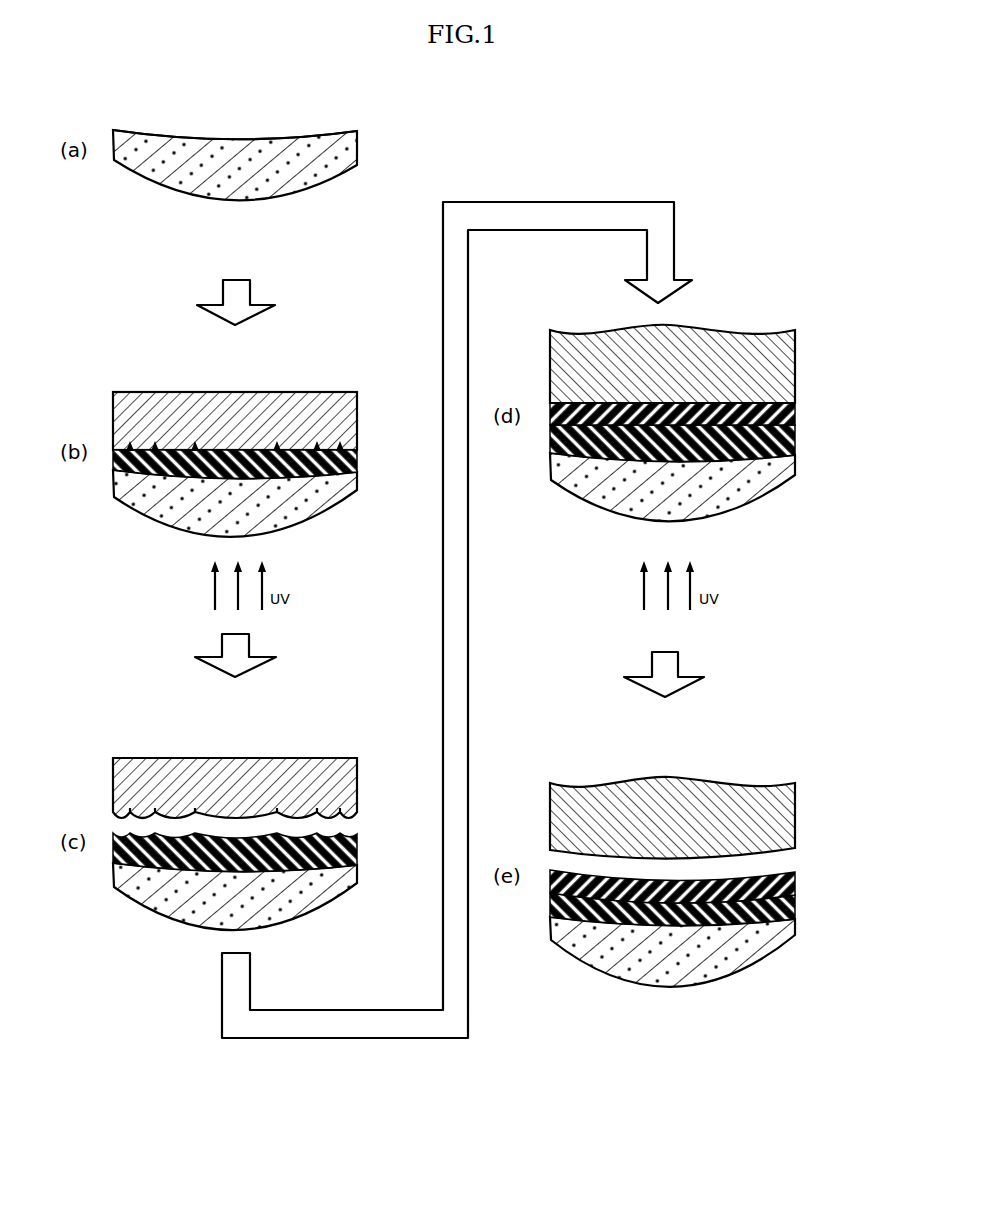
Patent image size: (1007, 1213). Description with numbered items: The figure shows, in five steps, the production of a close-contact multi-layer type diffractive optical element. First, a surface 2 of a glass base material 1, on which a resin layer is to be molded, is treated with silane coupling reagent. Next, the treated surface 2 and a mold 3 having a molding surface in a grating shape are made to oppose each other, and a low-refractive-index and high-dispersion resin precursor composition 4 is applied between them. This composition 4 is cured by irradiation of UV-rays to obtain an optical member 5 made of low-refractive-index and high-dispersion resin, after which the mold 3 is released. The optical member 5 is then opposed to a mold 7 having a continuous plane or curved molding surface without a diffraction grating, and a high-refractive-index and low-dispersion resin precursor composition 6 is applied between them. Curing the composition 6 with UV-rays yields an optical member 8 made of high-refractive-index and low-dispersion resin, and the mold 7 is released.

The glass base material 1 is at (357, 150).
The surface 2 is at (263, 139).
The mold 3 is at (358, 413).
The low-refractive-index and high-dispersion resin precursor composition 4 is at (358, 450).
The optical member 5 is at (358, 840).
The high-refractive-index and low-dispersion resin precursor composition 6 is at (795, 403).
The mold 7 is at (795, 370).
The optical member 8 is at (795, 868).